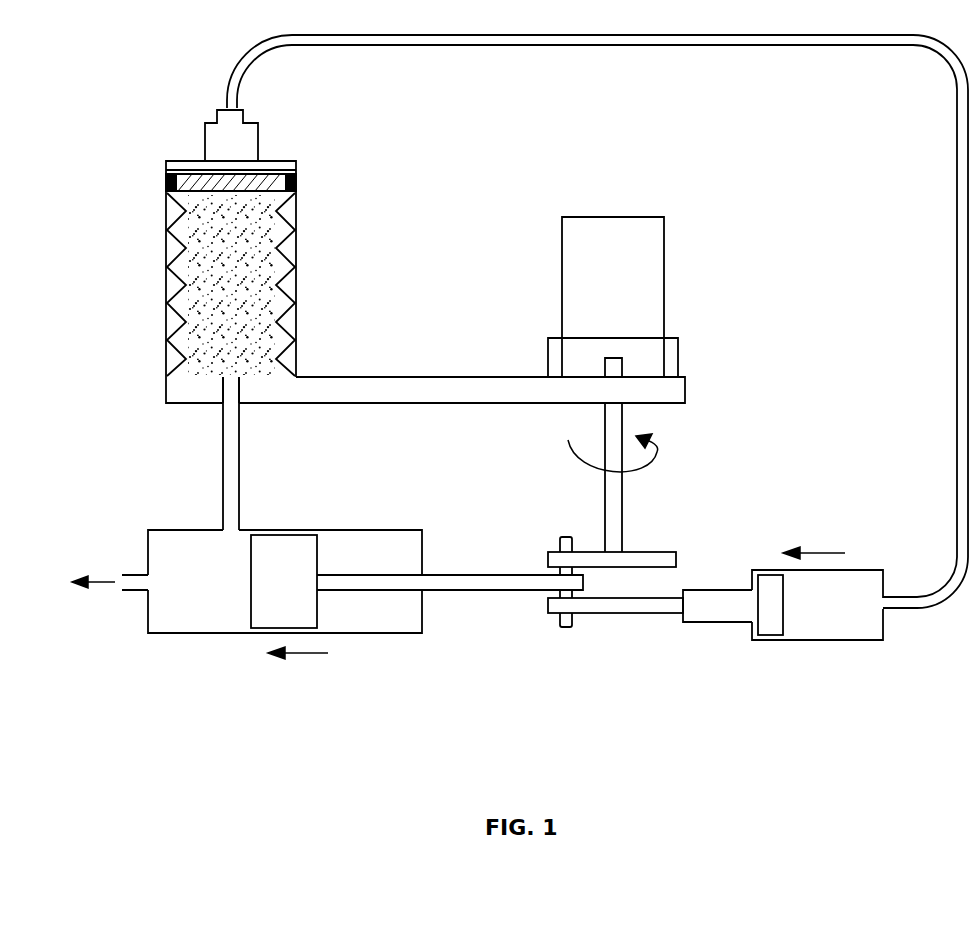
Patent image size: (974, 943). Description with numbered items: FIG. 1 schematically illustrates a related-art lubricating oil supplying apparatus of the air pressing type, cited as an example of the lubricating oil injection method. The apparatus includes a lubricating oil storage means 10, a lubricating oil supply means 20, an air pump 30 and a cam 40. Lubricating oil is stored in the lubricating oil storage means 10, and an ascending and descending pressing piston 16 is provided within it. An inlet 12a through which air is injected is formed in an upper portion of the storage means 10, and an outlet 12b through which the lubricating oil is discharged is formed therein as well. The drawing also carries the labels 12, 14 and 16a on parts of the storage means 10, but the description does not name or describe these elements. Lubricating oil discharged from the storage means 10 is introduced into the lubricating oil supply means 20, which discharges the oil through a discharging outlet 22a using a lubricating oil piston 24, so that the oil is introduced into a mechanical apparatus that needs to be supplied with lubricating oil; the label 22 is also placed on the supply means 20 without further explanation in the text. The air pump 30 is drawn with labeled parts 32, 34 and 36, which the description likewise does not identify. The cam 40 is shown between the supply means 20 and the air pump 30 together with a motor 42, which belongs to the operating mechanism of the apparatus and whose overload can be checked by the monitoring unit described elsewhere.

The lubricating oil storage means 10 is at (305, 256).
The container body 12 is at (297, 288).
The inlet 12a is at (236, 162).
The outlet 12b is at (237, 378).
The filter medium 14 is at (297, 252).
The pressing piston 16 is at (273, 170).
The seal 16a is at (277, 192).
The lubricating oil supply means 20 is at (345, 636).
The cylinder 22 is at (182, 634).
The discharging outlet 22a is at (138, 584).
The lubricating oil piston 24 is at (260, 621).
The air pump 30 is at (597, 391).
The supply cylinder 32 is at (850, 640).
The supply piston 34 is at (777, 630).
The supply tube 36 is at (922, 602).
The cam 40 is at (657, 555).
The motor 42 is at (653, 265).